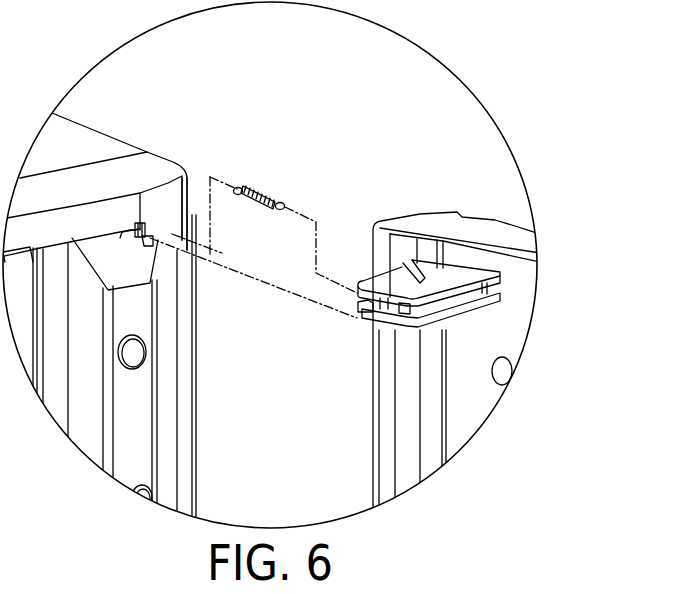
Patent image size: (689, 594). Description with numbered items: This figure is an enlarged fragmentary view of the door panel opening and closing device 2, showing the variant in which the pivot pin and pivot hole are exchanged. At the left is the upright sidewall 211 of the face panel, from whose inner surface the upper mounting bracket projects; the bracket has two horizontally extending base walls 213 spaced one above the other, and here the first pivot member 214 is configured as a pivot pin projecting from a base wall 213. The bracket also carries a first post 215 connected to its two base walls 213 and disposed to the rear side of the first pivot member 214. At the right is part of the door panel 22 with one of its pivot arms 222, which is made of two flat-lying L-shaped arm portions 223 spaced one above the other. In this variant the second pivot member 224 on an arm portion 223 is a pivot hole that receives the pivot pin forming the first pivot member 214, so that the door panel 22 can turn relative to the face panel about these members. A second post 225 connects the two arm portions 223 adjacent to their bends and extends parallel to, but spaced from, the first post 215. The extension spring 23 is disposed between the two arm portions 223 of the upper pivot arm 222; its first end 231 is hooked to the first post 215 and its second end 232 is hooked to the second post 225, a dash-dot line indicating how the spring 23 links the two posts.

The door panel opening and closing device 2 is at (386, 116).
The door panel 22 is at (523, 219).
The extension spring 23 is at (262, 187).
The upright sidewall 211 is at (167, 227).
The base walls 213 is at (143, 270).
The first pivot member 214 is at (152, 243).
The first post 215 is at (140, 226).
The pivot arms 222 is at (435, 262).
The arm portions 223 is at (462, 308).
The second pivot member 224 is at (366, 310).
The second post 225 is at (400, 309).
The first end 231 is at (240, 188).
The second end 232 is at (283, 204).